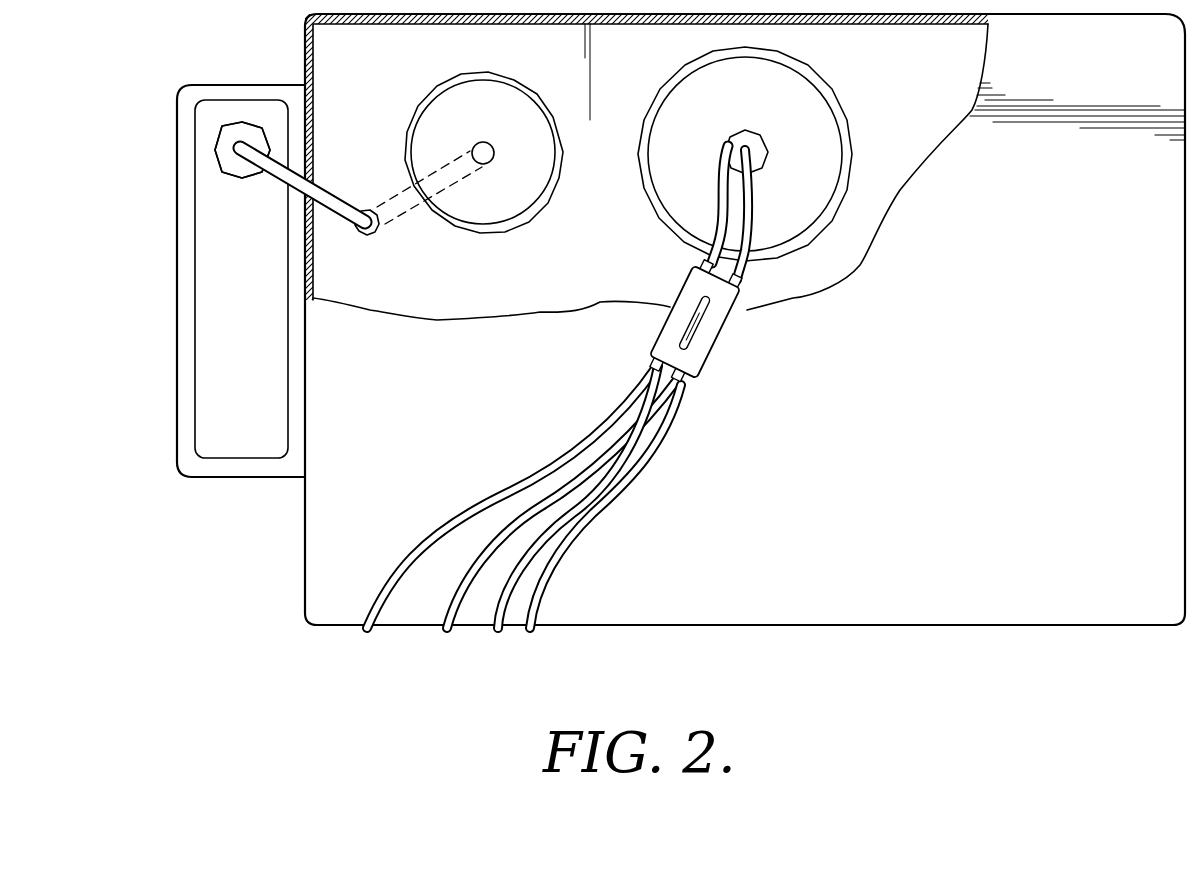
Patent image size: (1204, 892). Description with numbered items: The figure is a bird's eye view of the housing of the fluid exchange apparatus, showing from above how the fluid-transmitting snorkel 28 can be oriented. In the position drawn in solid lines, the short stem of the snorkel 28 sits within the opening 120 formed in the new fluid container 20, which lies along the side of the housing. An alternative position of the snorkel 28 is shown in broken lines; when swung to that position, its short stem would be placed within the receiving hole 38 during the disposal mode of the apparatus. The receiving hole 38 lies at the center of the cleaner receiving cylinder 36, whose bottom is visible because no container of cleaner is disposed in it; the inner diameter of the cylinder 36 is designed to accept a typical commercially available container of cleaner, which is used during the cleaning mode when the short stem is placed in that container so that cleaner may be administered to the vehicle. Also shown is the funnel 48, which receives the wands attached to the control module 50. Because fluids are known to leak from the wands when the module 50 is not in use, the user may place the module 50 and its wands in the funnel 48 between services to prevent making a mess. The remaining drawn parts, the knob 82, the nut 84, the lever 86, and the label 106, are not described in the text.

The new fluid container 20 is at (226, 343).
The snorkel 28 is at (326, 182).
The cleaner receiving cylinder 36 is at (503, 85).
The receiving hole 38 is at (493, 163).
The funnel 48 is at (825, 82).
The control module 50 is at (727, 340).
The lever knob 82 is at (357, 237).
The pivot nut 84 is at (240, 147).
The lever arm 86 is at (352, 207).
The dial face 106 is at (462, 128).
The opening 120 is at (220, 176).